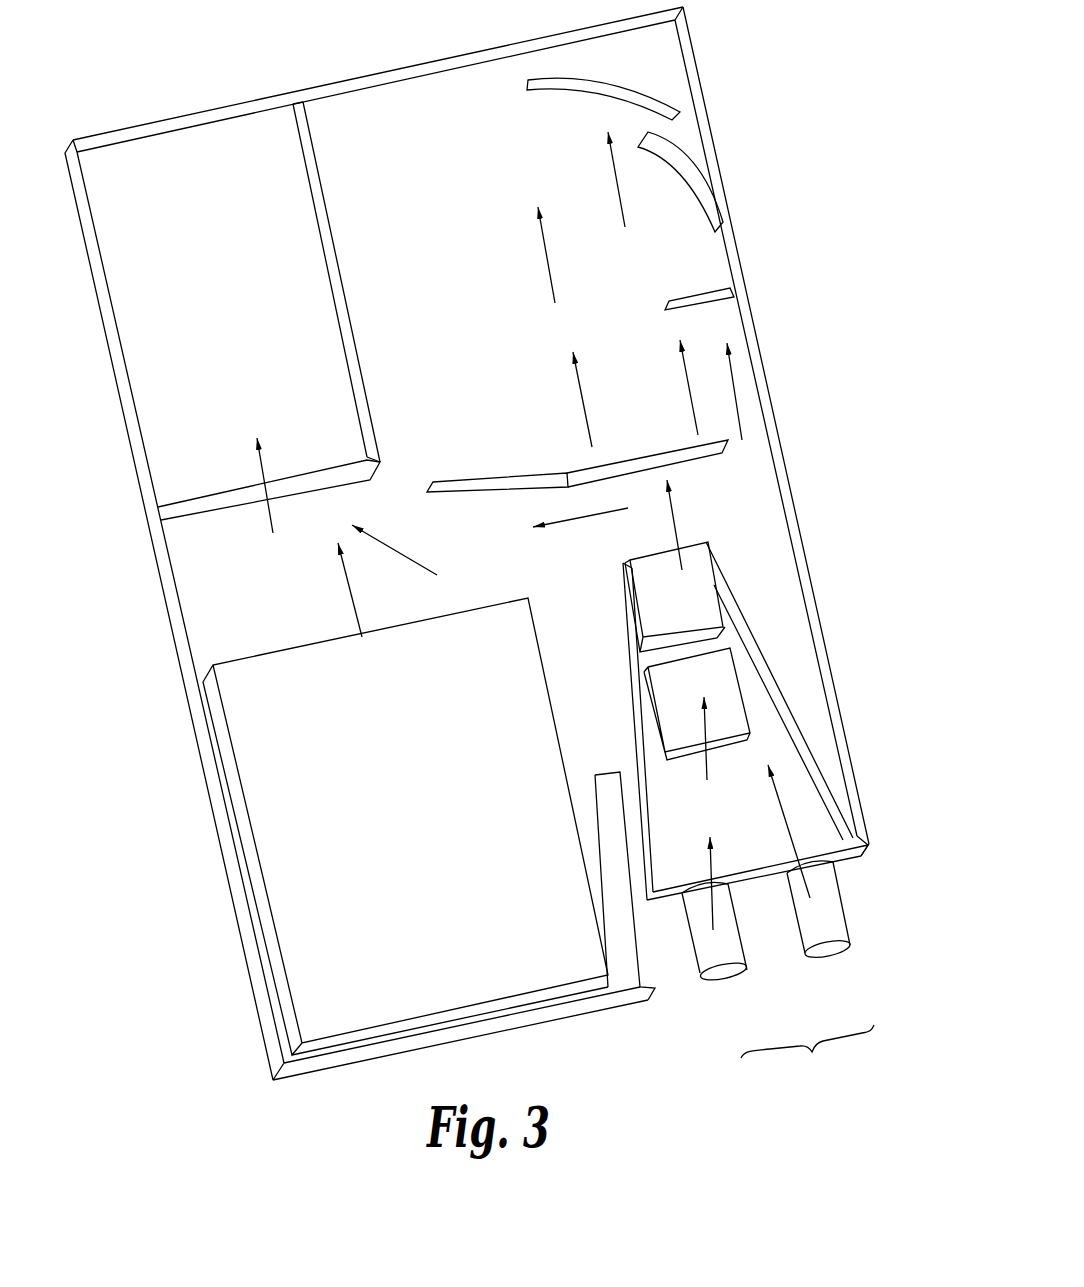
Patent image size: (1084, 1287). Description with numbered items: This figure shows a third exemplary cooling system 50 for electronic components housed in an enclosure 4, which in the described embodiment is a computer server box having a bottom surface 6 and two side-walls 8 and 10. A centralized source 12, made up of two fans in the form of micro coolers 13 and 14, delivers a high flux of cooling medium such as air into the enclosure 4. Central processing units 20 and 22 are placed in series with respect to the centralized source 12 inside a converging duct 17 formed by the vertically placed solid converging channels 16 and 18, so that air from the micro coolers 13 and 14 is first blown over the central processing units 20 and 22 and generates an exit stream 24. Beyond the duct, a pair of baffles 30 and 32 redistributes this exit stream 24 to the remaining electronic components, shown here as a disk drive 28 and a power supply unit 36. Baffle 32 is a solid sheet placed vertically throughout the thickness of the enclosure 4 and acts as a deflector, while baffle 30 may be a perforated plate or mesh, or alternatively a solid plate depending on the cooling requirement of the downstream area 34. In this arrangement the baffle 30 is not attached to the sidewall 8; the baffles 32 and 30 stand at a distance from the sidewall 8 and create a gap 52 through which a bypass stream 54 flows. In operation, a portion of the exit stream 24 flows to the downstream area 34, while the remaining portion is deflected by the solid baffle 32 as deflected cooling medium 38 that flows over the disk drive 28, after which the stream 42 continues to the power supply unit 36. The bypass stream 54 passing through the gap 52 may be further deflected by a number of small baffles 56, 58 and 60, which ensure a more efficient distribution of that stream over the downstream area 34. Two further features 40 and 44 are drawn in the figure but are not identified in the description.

The enclosure 4 is at (310, 93).
The bottom surface 6 is at (187, 592).
The side-wall 8 is at (728, 257).
The side-wall 10 is at (205, 770).
The centralized source 12 is at (807, 1063).
The micro cooler 13 is at (725, 975).
The micro cooler 14 is at (830, 955).
The converging channel 16 is at (852, 833).
The converging duct 17 is at (797, 797).
The converging channel 18 is at (655, 850).
The central processing unit 20 is at (707, 685).
The central processing unit 22 is at (703, 592).
The exit stream 24 is at (673, 517).
The disk drive 28 is at (365, 1017).
The baffle 30 is at (720, 455).
The baffle 32 is at (470, 485).
The downstream area 34 is at (607, 267).
The power supply unit 36 is at (210, 145).
The deflected portion of exit stream 38 is at (588, 522).
The airflow arrow 40 is at (415, 565).
The stream 42 is at (355, 600).
The shelf 44 is at (293, 480).
The cooling system 50 is at (865, 97).
The gap 52 is at (757, 437).
The bypass stream 54 is at (737, 392).
The small baffle 56 is at (718, 293).
The small baffle 58 is at (685, 160).
The small baffle 60 is at (636, 76).